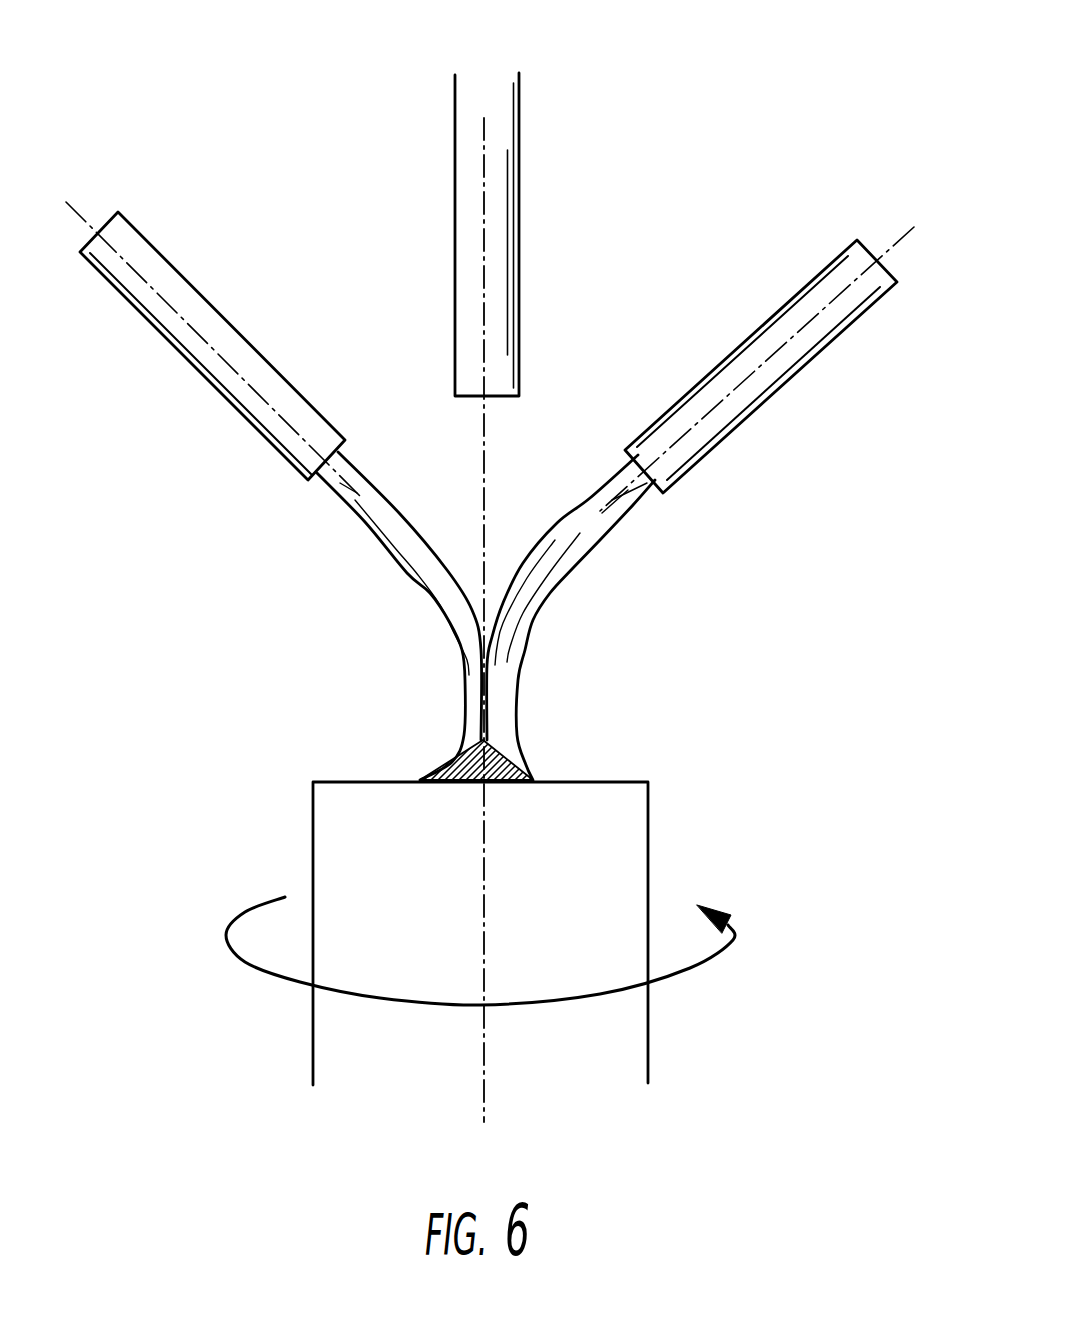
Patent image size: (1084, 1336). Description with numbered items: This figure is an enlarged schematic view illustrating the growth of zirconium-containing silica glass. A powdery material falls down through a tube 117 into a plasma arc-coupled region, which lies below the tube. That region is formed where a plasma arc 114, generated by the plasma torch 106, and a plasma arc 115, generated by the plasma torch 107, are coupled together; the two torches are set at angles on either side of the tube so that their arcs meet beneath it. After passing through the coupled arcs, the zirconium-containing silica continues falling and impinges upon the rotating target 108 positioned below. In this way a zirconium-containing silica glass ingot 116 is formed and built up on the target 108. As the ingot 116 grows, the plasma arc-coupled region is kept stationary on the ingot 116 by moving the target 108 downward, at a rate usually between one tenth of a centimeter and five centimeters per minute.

The plasma torch 106 is at (188, 362).
The plasma torch 107 is at (785, 383).
The rotating target 108 is at (648, 858).
The plasma arc 114 is at (425, 588).
The plasma arc 115 is at (573, 568).
The zirconium-containing silica glass ingot 116 is at (520, 772).
The tube 117 is at (520, 123).